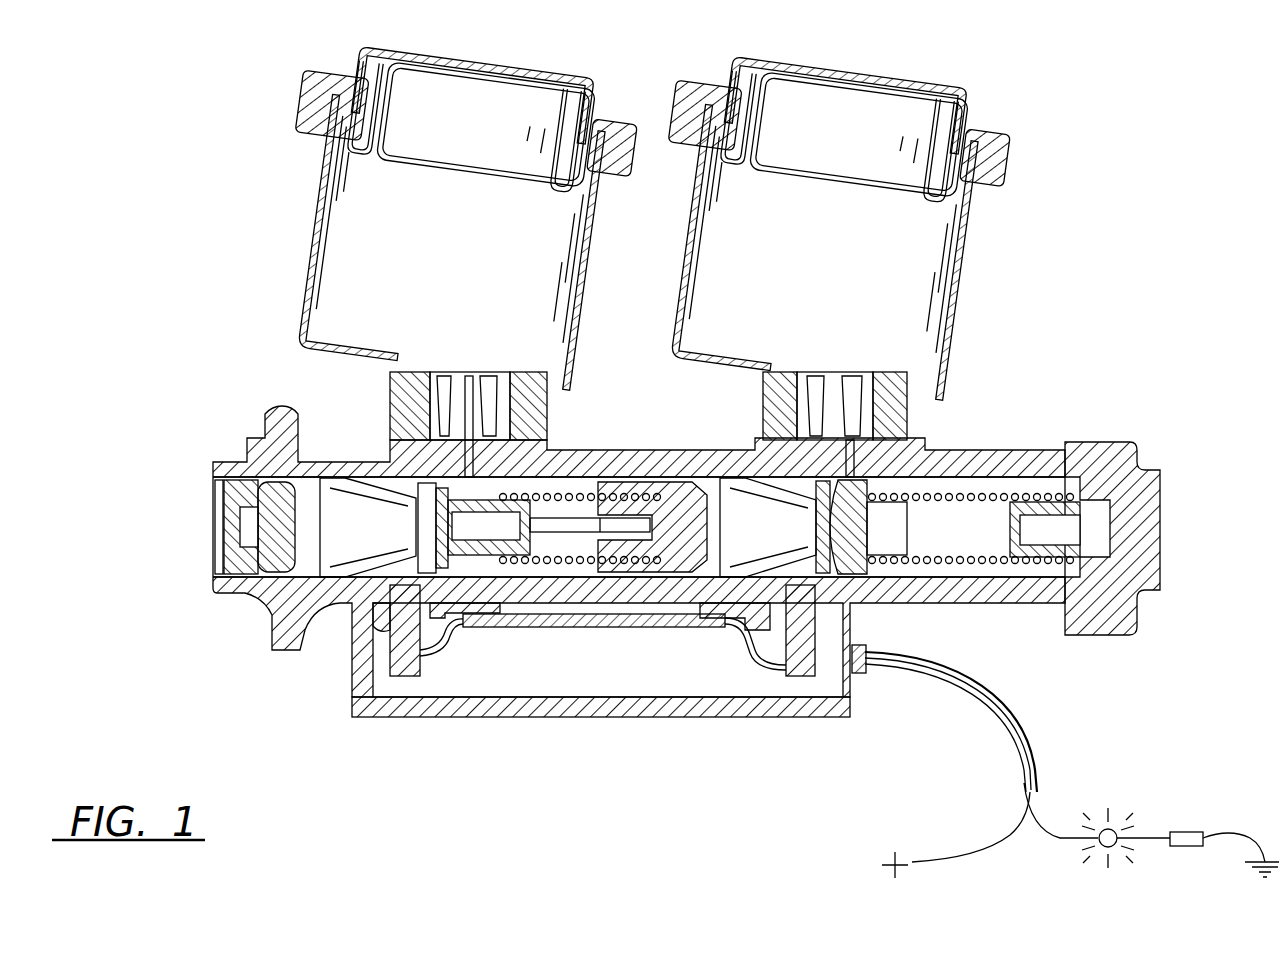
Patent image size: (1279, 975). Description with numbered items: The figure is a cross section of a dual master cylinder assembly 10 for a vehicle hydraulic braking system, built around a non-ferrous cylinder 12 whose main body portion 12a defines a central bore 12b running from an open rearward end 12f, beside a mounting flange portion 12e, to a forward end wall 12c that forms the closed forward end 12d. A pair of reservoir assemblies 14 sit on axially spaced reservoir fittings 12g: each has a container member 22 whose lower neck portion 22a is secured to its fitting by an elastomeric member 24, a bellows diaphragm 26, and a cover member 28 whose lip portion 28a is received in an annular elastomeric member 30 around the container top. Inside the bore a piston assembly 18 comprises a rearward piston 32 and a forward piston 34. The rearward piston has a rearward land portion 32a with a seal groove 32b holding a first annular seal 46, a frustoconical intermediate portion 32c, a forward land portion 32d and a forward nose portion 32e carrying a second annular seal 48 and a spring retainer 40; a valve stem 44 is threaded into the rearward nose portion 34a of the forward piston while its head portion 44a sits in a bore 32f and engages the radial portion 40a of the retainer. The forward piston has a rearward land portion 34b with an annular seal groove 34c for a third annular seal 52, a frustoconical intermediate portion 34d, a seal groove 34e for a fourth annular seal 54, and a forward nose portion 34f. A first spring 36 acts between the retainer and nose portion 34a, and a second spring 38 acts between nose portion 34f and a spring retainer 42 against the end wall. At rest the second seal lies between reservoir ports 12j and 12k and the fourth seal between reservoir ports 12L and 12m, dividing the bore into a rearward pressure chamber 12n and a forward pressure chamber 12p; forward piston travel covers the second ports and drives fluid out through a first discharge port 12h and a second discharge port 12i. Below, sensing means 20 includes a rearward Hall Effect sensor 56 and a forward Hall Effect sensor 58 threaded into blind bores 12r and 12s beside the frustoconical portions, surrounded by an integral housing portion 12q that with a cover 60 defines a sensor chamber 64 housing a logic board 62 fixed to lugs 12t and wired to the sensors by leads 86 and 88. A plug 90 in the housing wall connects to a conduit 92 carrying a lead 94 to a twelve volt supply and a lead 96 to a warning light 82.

The dual master cylinder assembly 10 is at (265, 261).
The cylinder 12 is at (1018, 405).
The main body portion 12a is at (660, 440).
The central bore 12b is at (975, 480).
The forward end wall 12c is at (1148, 458).
The closed forward end 12d is at (1167, 522).
The mounting flange portion 12e is at (250, 436).
The open rearward end 12f is at (200, 524).
The reservoir fitting 12g is at (503, 400).
The first discharge port 12h is at (698, 470).
The second discharge port 12i is at (1080, 470).
The first reservoir port 12j is at (456, 400).
The second reservoir port 12k is at (492, 405).
The first reservoir port 12L is at (812, 430).
The second reservoir port 12m is at (850, 430).
The rearward pressure chamber 12n is at (548, 700).
The forward pressure chamber 12p is at (985, 570).
The lower housing portion 12q is at (352, 690).
The blind threaded bore 12r is at (405, 590).
The blind threaded bore 12s is at (820, 560).
The lugs 12t is at (724, 662).
The reservoir assembly 14 is at (596, 57).
The piston assembly 18 is at (670, 478).
The sensing means 20 is at (420, 743).
The main body container member 22 is at (316, 195).
The lower neck portion 22a is at (370, 404).
The elastomeric member 24 is at (408, 370).
The diaphragm 26 is at (380, 148).
The cover member 28 is at (912, 78).
The lip portion 28a is at (1025, 118).
The annular elastomeric member 30 is at (1012, 168).
The rearward piston 32 is at (352, 497).
The rearward annular land portion 32a is at (238, 490).
The seal groove 32b is at (278, 605).
The intermediate portion 32c is at (364, 541).
The forward land portion 32d is at (348, 520).
The forward nose portion 32e is at (572, 490).
The bore 32f is at (503, 577).
The forward piston 34 is at (748, 494).
The rearward nose portion 34a is at (648, 577).
The rearward land portion 34b is at (730, 520).
The annular seal groove 34c is at (764, 538).
The intermediate portion 34d is at (855, 487).
The seal groove 34e is at (870, 580).
The forward nose portion 34f is at (907, 522).
The first spring 36 is at (585, 628).
The second spring 38 is at (1050, 632).
The spring retainer 40 is at (588, 514).
The radial portion 40a is at (528, 575).
The spring retainer 42 is at (1035, 495).
The valve stem 44 is at (605, 512).
The head portion 44a is at (535, 525).
The first annular seal 46 is at (284, 406).
The second annular seal 48 is at (469, 376).
The third annular seal 52 is at (668, 635).
The fourth annular seal 54 is at (830, 500).
The first Hall Effect magnetic sensor 56 is at (418, 670).
The second Hall Effect magnetic sensor 58 is at (805, 676).
The cover 60 is at (733, 717).
The logic board 62 is at (610, 635).
The sensor chamber 64 is at (580, 698).
The warning light 82 is at (1118, 824).
The leads 86 is at (455, 640).
The leads 88 is at (755, 660).
The plug 90 is at (862, 680).
The conduit 92 is at (1035, 750).
The lead 94 is at (995, 835).
The lead 96 is at (1046, 838).